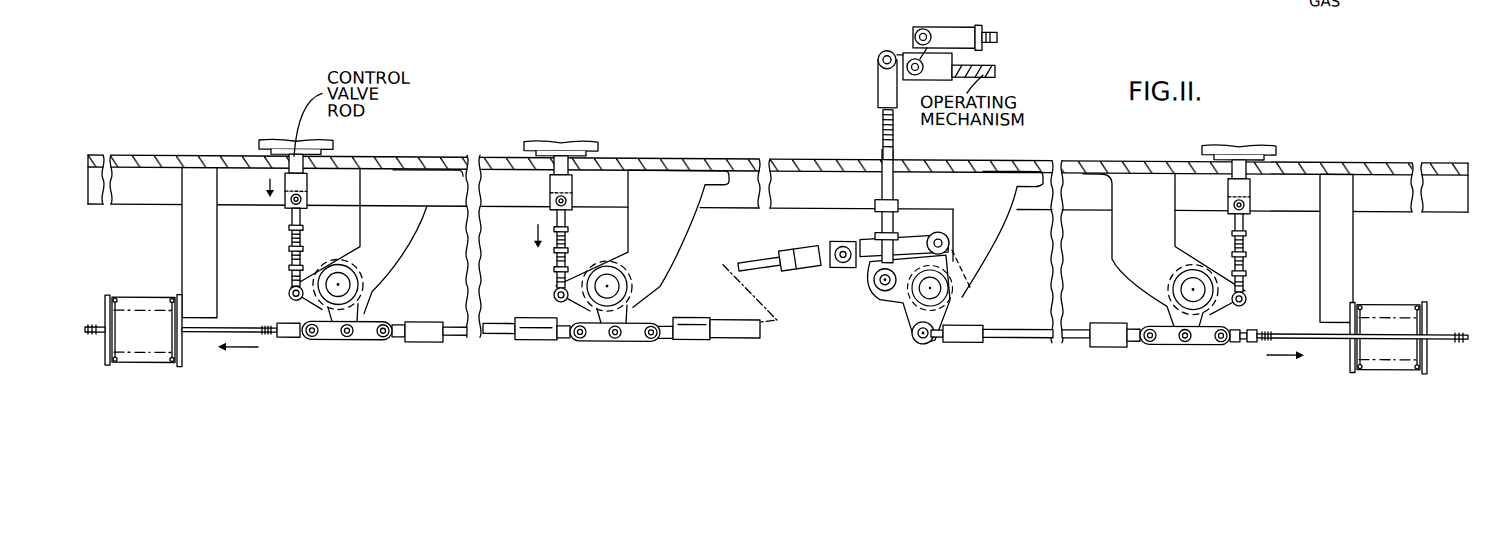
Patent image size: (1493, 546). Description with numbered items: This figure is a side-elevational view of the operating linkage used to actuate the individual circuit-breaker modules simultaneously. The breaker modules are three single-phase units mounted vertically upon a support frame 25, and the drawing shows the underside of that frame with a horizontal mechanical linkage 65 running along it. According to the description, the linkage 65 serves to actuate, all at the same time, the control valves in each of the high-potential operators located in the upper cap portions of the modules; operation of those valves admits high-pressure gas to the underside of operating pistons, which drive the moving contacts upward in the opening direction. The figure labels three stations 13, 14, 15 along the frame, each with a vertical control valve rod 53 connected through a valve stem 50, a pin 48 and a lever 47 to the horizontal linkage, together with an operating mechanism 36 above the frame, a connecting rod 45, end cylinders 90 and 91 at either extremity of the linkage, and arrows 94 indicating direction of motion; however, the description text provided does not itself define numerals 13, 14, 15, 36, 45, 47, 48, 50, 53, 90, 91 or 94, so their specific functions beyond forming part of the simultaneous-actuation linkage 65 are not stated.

The first control valve station 13 is at (273, 128).
The second control valve station 14 is at (518, 134).
The third control valve station 15 is at (1271, 123).
The support frame 25 is at (655, 118).
The operating cylinder 36 is at (957, 22).
The connecting rod 45 is at (503, 330).
The bell crank lever 47 is at (360, 308).
The link arm pin 48 is at (288, 290).
The valve stem 50 is at (307, 163).
The control valve rod 53 is at (300, 240).
The horizontal mechanical linkage 65 is at (1017, 328).
The air cylinder 90 is at (147, 300).
The air cylinder 91 is at (1393, 299).
The direction of movement 94 is at (270, 180).